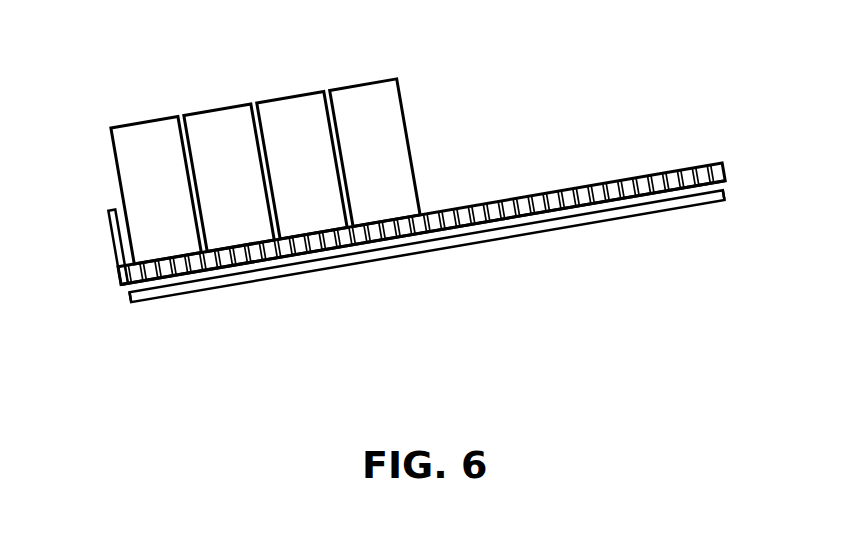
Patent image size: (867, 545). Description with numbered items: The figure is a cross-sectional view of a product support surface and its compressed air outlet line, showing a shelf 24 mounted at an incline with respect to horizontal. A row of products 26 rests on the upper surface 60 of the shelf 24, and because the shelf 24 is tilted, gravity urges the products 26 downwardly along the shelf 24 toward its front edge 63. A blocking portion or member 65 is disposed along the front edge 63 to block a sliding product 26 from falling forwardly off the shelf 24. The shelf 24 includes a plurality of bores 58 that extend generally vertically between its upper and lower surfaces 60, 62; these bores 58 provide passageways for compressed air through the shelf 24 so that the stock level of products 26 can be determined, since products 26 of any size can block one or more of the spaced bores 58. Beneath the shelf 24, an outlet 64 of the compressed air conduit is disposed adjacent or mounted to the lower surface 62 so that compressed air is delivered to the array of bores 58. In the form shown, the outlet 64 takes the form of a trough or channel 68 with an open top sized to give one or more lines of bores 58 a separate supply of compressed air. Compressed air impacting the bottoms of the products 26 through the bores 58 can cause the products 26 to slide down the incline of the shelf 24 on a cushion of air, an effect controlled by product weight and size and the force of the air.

The shelf 24 is at (418, 205).
The products 26 is at (141, 123).
The bores 58 is at (419, 224).
The upper surface 60 is at (421, 224).
The lower surface 62 is at (423, 233).
The front edge 63 is at (131, 297).
The outlet 64 is at (724, 195).
The blocking member 65 is at (118, 246).
The trough 68 is at (427, 246).